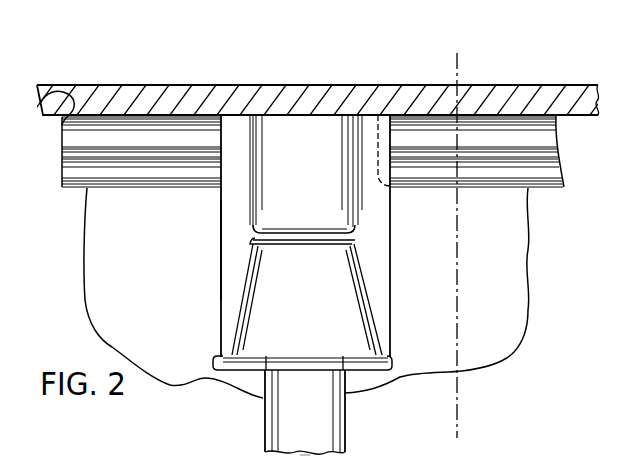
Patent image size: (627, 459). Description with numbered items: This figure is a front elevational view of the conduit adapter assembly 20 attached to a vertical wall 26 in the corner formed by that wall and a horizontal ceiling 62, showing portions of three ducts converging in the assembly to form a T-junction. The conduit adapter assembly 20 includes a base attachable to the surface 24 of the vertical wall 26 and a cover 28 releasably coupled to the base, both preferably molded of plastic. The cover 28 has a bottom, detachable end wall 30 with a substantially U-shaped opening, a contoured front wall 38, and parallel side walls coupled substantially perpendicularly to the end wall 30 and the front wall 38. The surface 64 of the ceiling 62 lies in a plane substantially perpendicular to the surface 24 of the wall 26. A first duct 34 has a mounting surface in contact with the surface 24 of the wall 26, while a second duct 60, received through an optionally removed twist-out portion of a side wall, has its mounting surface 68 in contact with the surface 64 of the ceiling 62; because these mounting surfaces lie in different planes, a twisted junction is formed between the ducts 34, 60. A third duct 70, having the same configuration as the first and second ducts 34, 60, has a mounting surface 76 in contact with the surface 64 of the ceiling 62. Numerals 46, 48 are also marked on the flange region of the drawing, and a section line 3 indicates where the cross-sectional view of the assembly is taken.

The section line 3 is at (457, 53).
The conduit adapter assembly 20 is at (212, 303).
The surface 24 is at (343, 219).
The vertical wall 26 is at (534, 283).
The cover 28 is at (212, 270).
The detachable end wall 30 is at (368, 455).
The first duct 34 is at (262, 438).
The contoured front wall 38 is at (350, 296).
The flange end 46 is at (216, 367).
The flange end 48 is at (383, 371).
The second duct 60 is at (500, 192).
The ceiling 62 is at (549, 77).
The surface 64 is at (585, 116).
The mounting surface 68 is at (497, 112).
The third duct 70 is at (134, 192).
The mounting surface 76 is at (40, 104).